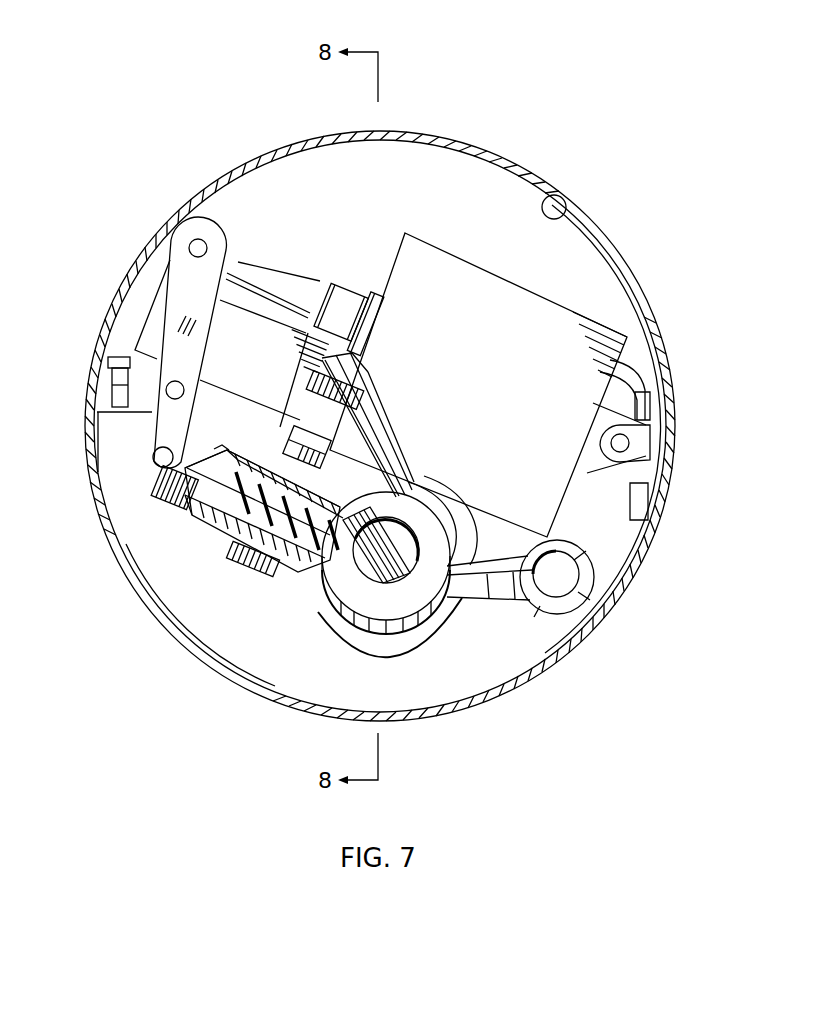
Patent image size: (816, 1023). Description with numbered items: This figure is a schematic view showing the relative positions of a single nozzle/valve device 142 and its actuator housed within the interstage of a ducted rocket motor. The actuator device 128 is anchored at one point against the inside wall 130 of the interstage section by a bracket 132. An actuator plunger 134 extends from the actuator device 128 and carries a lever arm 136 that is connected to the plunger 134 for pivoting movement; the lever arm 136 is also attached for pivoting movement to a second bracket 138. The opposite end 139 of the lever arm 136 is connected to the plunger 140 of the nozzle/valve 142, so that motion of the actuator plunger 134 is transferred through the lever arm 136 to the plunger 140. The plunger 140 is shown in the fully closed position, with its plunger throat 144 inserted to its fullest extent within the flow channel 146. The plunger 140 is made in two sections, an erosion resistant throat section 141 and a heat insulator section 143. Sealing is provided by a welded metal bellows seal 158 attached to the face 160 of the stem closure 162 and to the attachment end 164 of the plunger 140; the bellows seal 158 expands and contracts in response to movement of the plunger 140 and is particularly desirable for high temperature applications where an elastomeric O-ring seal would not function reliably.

The actuator device 128 is at (548, 317).
The inside wall 130 is at (566, 214).
The bracket 132 is at (657, 430).
The actuator plunger 134 is at (257, 273).
The lever arm 136 is at (193, 273).
The bracket 138 is at (138, 377).
The opposite end 139 is at (152, 449).
The plunger 140 is at (245, 505).
The erosion resistant throat section 141 is at (352, 573).
The nozzle/valve device 142 is at (192, 537).
The heat insulator section 143 is at (223, 538).
The plunger throat 144 is at (433, 595).
The flow channel 146 is at (367, 562).
The welded metal bellows seal 158 is at (177, 493).
The face 160 is at (220, 448).
The stem closure 162 is at (227, 532).
The attachment end 164 is at (153, 468).